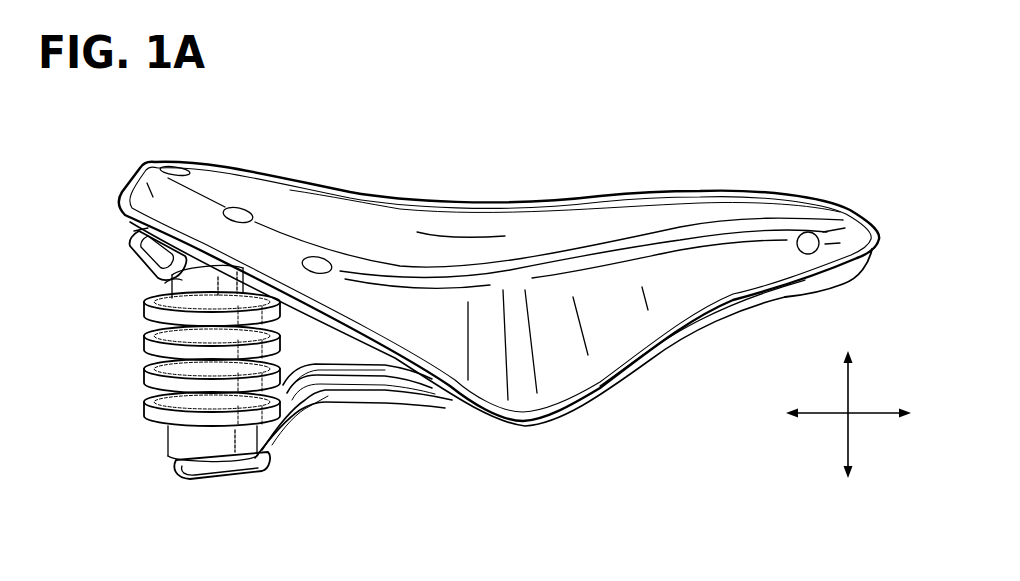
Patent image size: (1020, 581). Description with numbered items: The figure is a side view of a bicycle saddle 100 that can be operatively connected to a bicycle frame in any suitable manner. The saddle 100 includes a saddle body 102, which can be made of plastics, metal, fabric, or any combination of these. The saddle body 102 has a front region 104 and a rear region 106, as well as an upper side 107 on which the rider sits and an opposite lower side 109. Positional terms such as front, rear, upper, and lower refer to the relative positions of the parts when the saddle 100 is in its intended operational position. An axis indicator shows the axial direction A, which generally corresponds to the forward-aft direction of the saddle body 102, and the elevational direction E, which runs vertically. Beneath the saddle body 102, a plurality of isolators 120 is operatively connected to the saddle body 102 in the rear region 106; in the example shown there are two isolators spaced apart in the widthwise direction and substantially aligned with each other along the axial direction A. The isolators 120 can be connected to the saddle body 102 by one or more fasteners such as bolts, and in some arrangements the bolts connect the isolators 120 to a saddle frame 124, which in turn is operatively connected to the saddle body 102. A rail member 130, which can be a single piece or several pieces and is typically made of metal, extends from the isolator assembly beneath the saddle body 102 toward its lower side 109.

The saddle 100 is at (650, 83).
The saddle body 102 is at (843, 206).
The front region 104 is at (805, 147).
The rear region 106 is at (297, 143).
The upper side 107 is at (678, 210).
The lower side 109 is at (700, 332).
The isolators 120 is at (112, 338).
The saddle frame 124 is at (131, 250).
The rail member 130 is at (373, 406).
The elevational direction E is at (848, 388).
The axial direction A is at (873, 413).